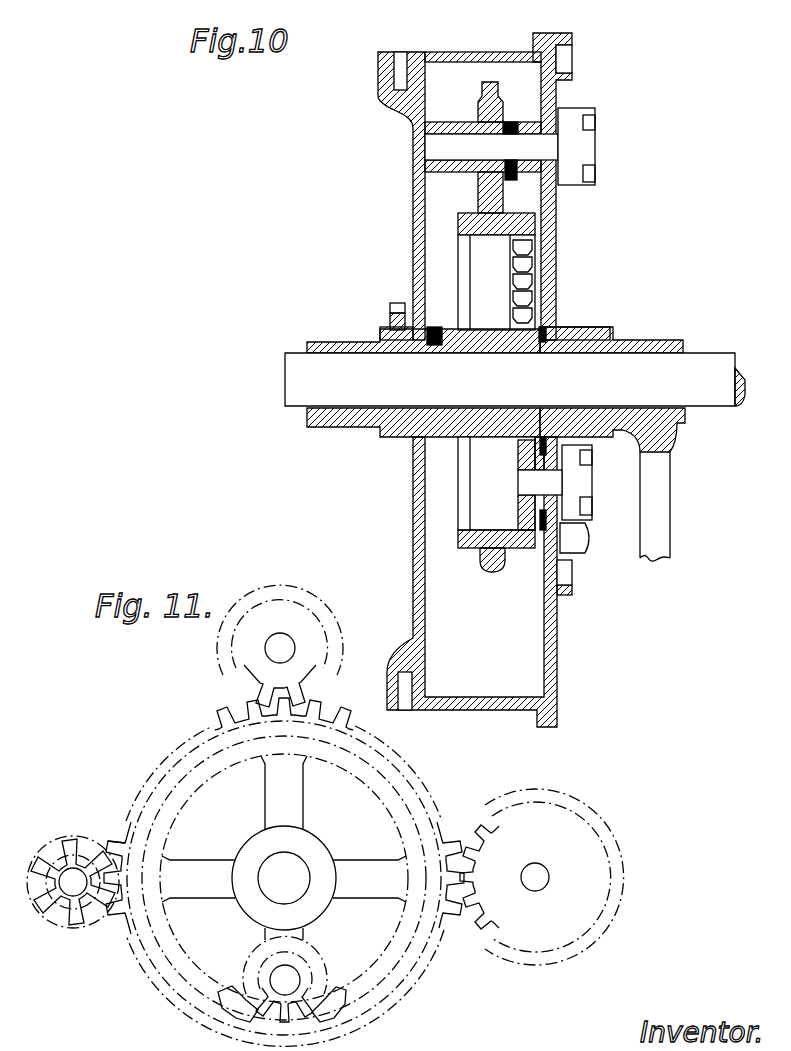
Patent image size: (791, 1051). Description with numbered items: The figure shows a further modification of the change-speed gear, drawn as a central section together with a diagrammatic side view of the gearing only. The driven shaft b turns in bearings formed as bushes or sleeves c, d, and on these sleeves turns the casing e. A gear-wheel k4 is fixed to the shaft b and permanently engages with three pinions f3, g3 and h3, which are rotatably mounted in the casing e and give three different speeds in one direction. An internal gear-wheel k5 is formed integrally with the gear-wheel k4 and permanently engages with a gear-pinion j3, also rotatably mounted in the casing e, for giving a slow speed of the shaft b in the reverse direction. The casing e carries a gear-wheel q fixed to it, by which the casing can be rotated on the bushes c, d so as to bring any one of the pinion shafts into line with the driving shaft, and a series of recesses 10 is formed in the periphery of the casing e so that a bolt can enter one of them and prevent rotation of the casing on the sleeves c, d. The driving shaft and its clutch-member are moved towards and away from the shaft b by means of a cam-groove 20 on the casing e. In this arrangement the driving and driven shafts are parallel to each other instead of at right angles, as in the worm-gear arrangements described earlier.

In FIG. 10, the driven shaft b is at (515, 379).
In FIG. 11, the driven shaft b is at (284, 872).
In FIG. 10, the sleeve c is at (332, 343).
In FIG. 10, the sleeve d is at (656, 342).
In FIG. 10, the casing e is at (413, 214).
In FIG. 10, the gear-wheel q is at (395, 308).
In FIG. 10, the recess 10 is at (397, 58).
In FIG. 10, the cam-groove 20 is at (572, 50).
In FIG. 10, the pinion g3 is at (498, 112).
In FIG. 11, the pinion g3 is at (280, 646).
In FIG. 11, the pinion h3 is at (542, 877).
In FIG. 11, the pinion f3 is at (90, 926).
In FIG. 10, the gear-pinion j3 is at (574, 541).
In FIG. 11, the gear-pinion j3 is at (252, 982).
In FIG. 10, the gear-wheel k4 is at (497, 568).
In FIG. 11, the gear-wheel k4 is at (108, 834).
In FIG. 10, the internal gear-wheel k5 is at (548, 300).
In FIG. 11, the internal gear-wheel k5 is at (330, 1000).